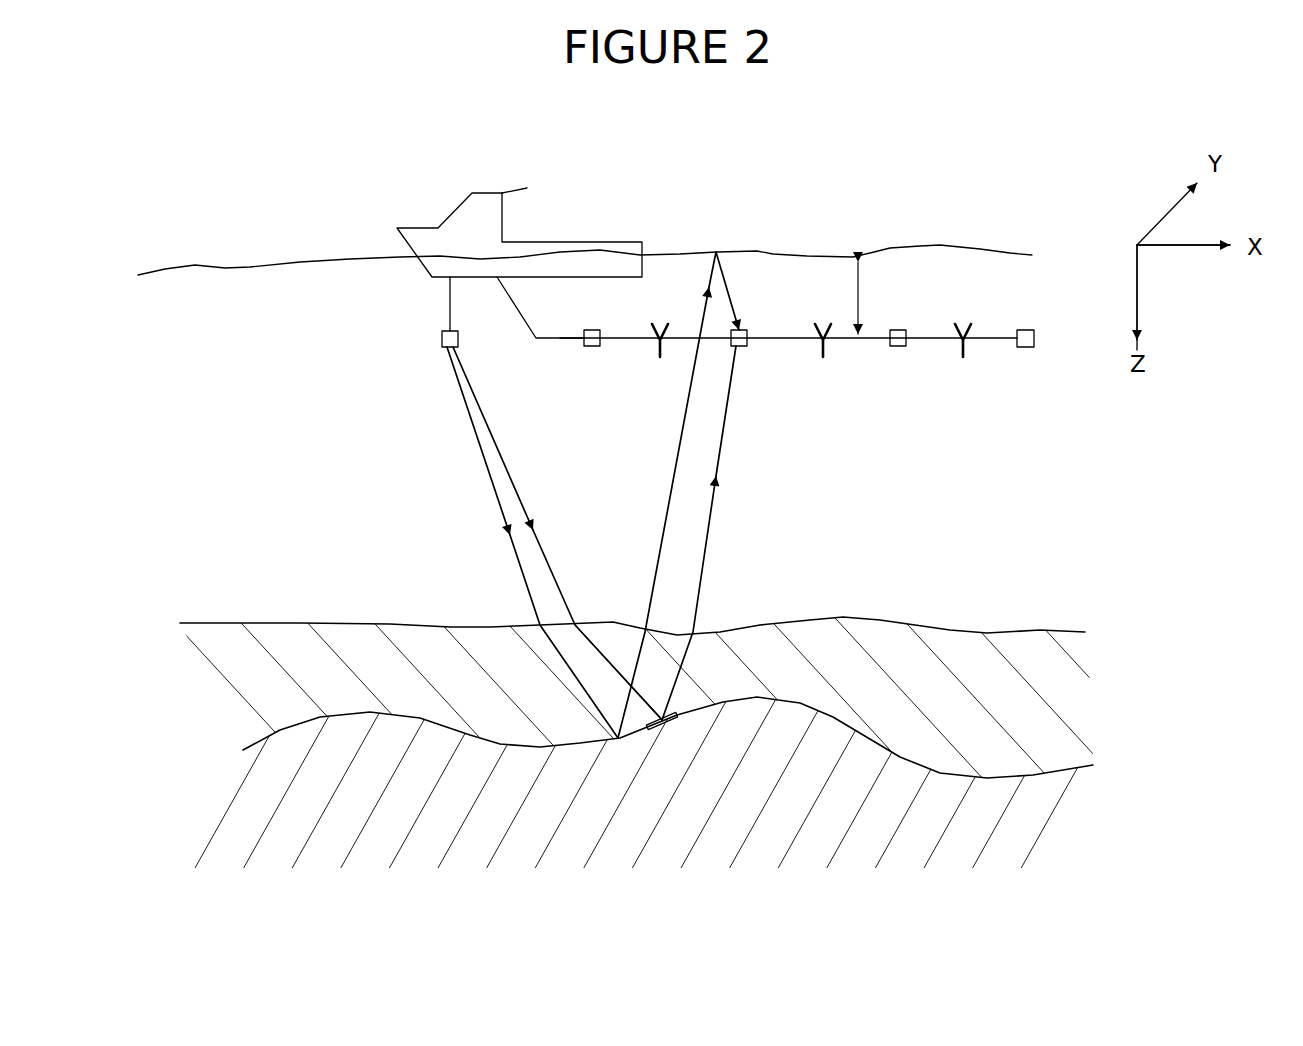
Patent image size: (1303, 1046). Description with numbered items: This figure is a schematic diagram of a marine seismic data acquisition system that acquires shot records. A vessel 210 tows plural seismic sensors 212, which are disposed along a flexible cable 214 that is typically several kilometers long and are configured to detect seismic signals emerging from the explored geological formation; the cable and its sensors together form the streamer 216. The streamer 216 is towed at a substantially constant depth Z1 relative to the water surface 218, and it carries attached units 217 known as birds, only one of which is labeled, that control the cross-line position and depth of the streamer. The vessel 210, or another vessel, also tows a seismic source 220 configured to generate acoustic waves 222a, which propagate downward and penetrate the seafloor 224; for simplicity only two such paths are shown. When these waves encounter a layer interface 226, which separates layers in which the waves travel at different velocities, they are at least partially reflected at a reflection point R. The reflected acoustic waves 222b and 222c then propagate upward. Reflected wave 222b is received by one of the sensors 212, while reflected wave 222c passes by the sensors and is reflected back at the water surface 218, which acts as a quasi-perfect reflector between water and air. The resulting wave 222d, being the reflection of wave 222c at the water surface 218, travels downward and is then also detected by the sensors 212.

The vessel 210 is at (452, 223).
The seismic sensors 212 is at (592, 347).
The flexible cable 214 is at (572, 347).
The streamer 216 is at (614, 424).
The birds 217 is at (968, 347).
The water surface 218 is at (757, 250).
The seismic source 220 is at (442, 338).
The acoustic waves 222a is at (512, 483).
The reflected acoustic wave 222b is at (701, 568).
The reflected acoustic wave 222c is at (669, 505).
The wave 222d is at (728, 288).
The seafloor 224 is at (897, 620).
The layer interface 226 is at (938, 773).
The reflection point / reflector R is at (651, 729).
The constant depth Z1 is at (862, 293).